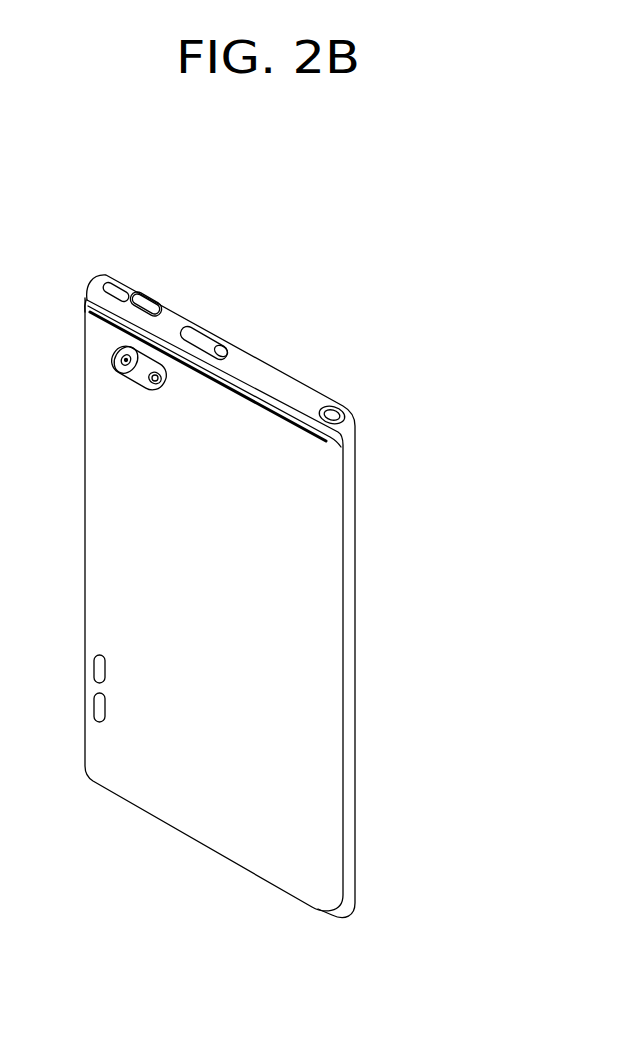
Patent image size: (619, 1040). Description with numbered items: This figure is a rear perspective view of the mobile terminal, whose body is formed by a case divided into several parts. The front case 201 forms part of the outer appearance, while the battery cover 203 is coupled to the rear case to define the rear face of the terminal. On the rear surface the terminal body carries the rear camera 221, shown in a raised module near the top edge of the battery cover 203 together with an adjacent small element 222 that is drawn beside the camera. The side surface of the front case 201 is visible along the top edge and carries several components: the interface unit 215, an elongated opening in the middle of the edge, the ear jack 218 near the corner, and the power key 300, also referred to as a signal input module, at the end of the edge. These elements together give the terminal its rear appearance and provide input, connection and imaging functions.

The front case 201 is at (350, 440).
The battery cover 203 is at (327, 479).
The interface unit 215 is at (197, 345).
The ear jack 218 is at (332, 409).
The rear camera 221 is at (112, 358).
The flash 222 is at (148, 379).
The power key 300 is at (146, 298).